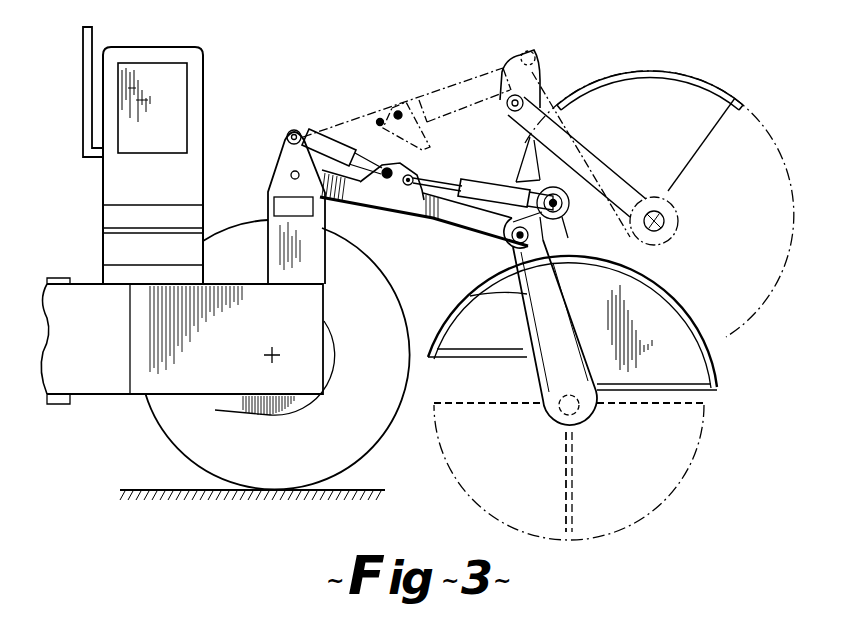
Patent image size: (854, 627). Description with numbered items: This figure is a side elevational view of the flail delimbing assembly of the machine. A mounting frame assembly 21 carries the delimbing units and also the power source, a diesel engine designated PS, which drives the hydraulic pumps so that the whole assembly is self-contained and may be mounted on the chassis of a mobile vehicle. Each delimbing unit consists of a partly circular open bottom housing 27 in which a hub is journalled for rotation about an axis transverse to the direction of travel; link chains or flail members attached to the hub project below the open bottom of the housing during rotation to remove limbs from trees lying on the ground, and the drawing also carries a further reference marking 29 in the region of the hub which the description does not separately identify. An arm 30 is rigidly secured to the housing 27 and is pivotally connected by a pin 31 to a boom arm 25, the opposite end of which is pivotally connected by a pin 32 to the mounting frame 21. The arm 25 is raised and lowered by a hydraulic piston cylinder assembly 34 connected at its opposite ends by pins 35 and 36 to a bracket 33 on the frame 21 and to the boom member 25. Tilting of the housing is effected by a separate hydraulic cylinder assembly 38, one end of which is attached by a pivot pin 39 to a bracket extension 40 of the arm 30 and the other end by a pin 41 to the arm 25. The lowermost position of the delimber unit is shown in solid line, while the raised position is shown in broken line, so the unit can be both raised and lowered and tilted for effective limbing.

The mounting frame assembly 21 is at (228, 268).
The arm 25 is at (426, 232).
The housing 27 is at (708, 312).
The wheel center line 29 is at (566, 487).
The arm 30 is at (470, 296).
The pin 31 is at (547, 238).
The pin 32 is at (300, 177).
The bracket 33 is at (270, 181).
The hydraulic piston cylinder assembly 34 is at (323, 133).
The pin 35 is at (288, 131).
The pin 36 is at (385, 170).
The hydraulic cylinder assembly 38 is at (462, 186).
The pivot pin 39 is at (596, 160).
The bracket extension 40 is at (600, 198).
The pin 41 is at (410, 174).
The diesel engine PS is at (133, 173).